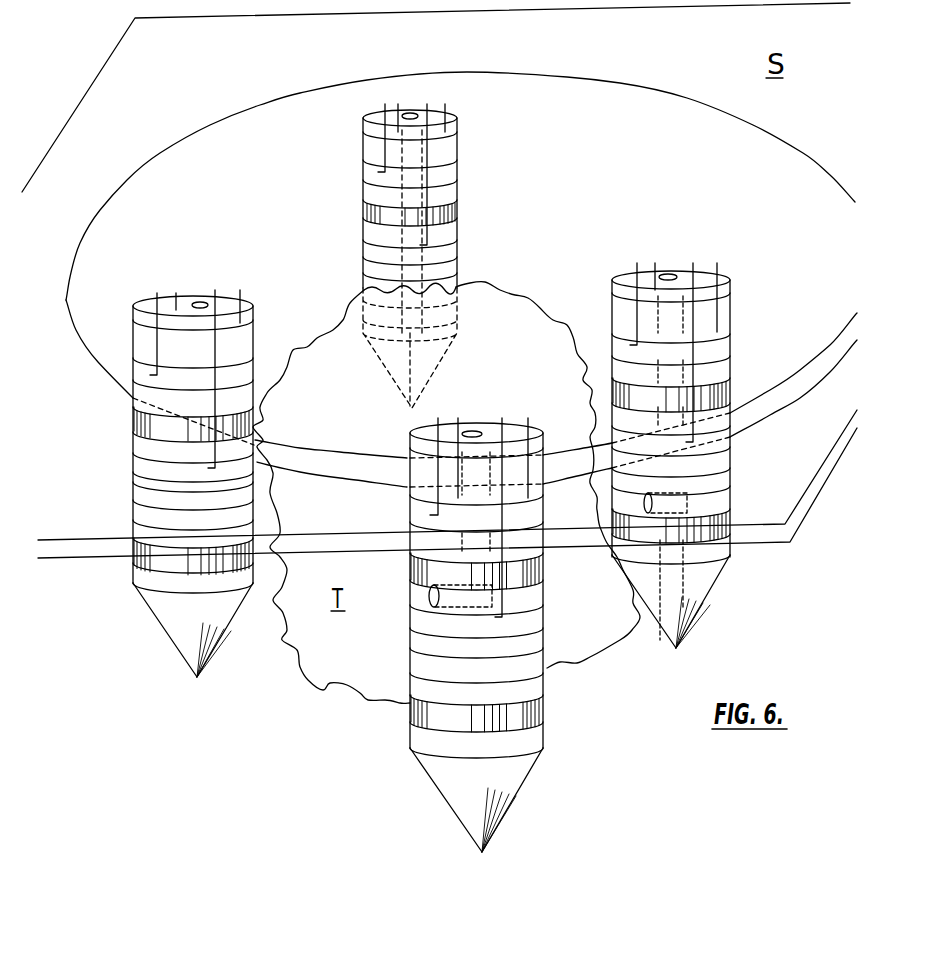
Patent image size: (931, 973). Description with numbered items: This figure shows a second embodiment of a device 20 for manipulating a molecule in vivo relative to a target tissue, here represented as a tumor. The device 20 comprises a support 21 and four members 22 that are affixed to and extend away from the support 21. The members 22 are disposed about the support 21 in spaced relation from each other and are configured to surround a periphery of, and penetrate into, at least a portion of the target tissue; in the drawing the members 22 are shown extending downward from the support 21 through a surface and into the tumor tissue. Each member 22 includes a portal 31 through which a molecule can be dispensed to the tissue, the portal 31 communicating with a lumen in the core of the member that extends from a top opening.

The device 20 is at (180, 777).
The support 21 is at (629, 194).
The member 22 is at (358, 198).
The portal 31 is at (428, 596).